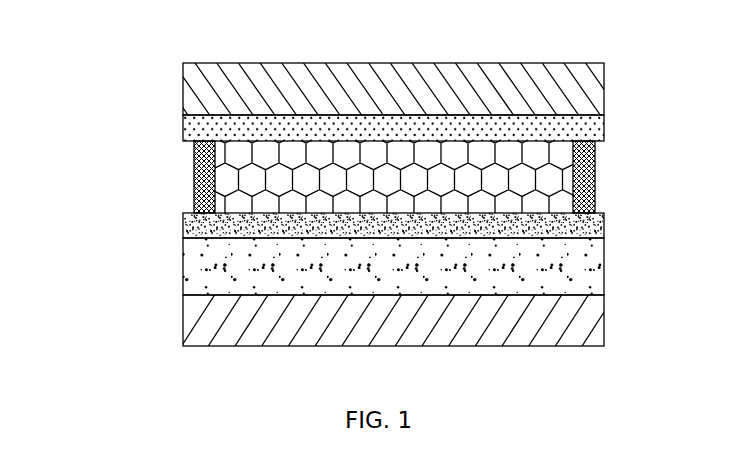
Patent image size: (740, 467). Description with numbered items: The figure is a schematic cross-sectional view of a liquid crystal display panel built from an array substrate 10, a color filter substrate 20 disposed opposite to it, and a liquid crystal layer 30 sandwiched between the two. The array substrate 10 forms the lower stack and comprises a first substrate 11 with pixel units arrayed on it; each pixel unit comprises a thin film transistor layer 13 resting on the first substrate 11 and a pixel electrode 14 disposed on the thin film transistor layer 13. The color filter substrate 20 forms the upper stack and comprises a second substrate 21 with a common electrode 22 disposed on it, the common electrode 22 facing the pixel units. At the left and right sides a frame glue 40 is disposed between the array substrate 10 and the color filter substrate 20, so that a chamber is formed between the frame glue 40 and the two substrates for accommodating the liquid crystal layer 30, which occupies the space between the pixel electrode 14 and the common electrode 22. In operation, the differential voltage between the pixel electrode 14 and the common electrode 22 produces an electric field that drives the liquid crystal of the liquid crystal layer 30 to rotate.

The array substrate 10 is at (357, 279).
The first substrate 11 is at (578, 317).
The thin film transistor layer 13 is at (573, 265).
The pixel electrode 14 is at (597, 230).
The color filter substrate 20 is at (364, 91).
The second substrate 21 is at (568, 95).
The common electrode 22 is at (580, 125).
The liquid crystal layer 30 is at (483, 156).
The frame glue 40 is at (592, 185).